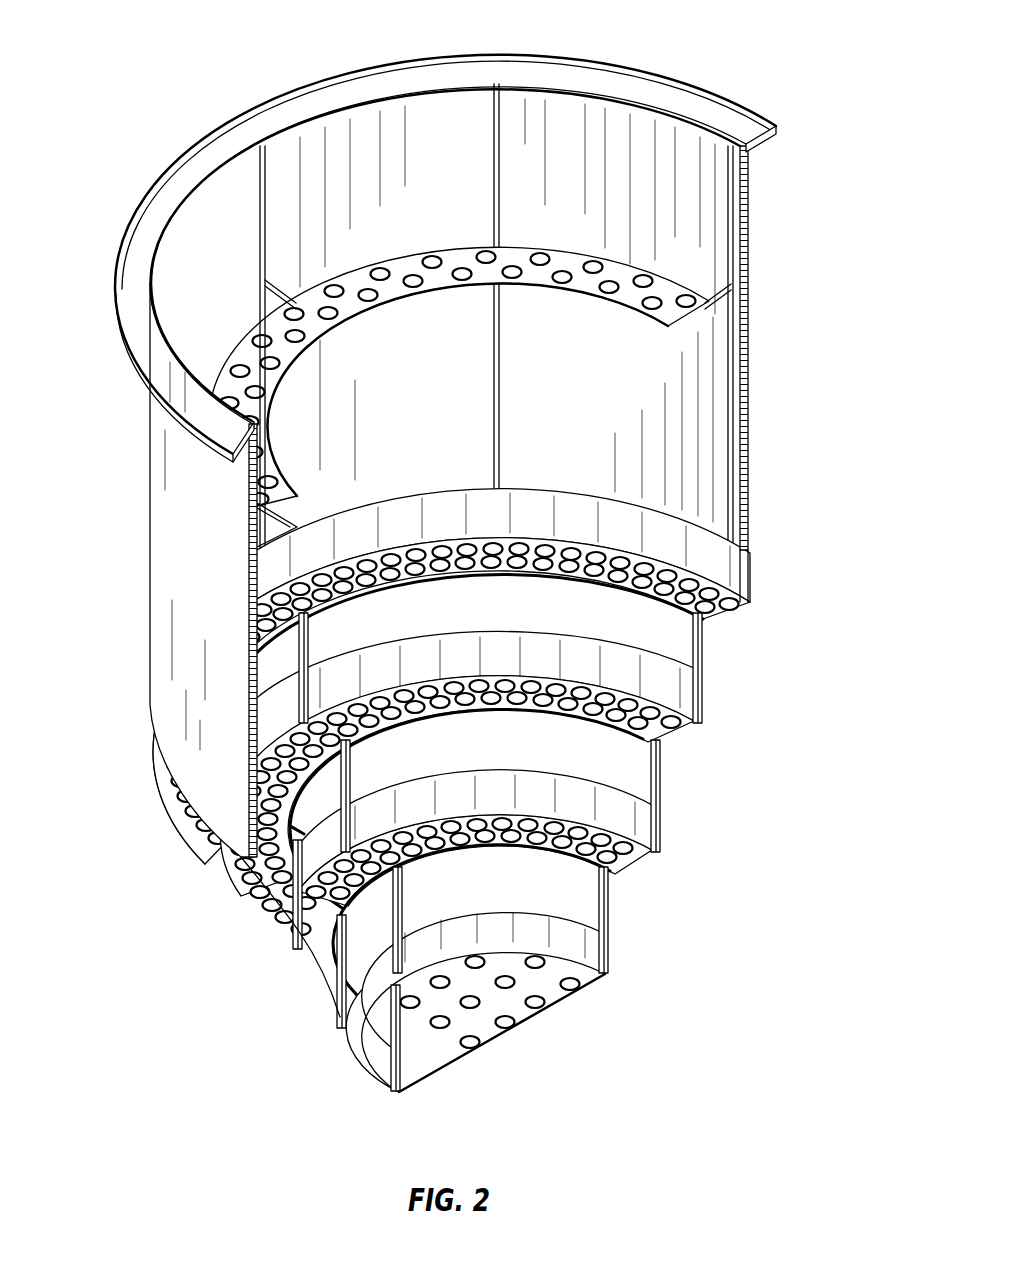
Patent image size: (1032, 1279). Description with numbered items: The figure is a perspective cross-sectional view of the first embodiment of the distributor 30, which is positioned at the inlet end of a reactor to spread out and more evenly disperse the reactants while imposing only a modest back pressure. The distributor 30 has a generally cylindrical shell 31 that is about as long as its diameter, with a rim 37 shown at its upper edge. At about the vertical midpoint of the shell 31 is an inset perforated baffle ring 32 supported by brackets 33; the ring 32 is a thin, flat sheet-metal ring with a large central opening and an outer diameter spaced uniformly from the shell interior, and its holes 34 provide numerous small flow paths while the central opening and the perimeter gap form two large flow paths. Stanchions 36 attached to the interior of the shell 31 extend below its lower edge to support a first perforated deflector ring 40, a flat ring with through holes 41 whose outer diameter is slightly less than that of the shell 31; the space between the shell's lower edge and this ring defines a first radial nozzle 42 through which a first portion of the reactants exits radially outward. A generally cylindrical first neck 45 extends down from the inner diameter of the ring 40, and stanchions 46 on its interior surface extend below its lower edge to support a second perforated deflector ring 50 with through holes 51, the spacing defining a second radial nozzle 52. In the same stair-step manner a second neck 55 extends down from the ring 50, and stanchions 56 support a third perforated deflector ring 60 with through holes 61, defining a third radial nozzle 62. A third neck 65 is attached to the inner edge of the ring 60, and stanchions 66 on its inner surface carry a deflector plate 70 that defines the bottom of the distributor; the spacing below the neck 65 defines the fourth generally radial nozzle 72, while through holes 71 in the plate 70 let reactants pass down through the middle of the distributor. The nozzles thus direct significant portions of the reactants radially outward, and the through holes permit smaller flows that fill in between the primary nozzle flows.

The distributor 30 is at (759, 192).
The generally cylindrical shell 31 is at (752, 456).
The inset perforated baffle ring 32 is at (580, 264).
The brackets 33 is at (288, 280).
The holes 34 is at (490, 255).
The stanchions 36 is at (495, 385).
The top rim flange 37 is at (687, 93).
The first perforated deflector ring 40 is at (570, 556).
The through holes 41 is at (412, 548).
The first radial nozzle 42 is at (718, 556).
The first neck 45 is at (497, 620).
The stanchions 46 is at (322, 655).
The second perforated deflector ring 50 is at (600, 695).
The through holes 51 is at (568, 683).
The second radial nozzle 52 is at (690, 695).
The second neck 55 is at (500, 765).
The stanchions 56 is at (365, 766).
The third perforated deflector ring 60 is at (582, 832).
The through holes 61 is at (507, 815).
The third radial nozzle 62 is at (622, 810).
The third neck 65 is at (485, 895).
The stanchions 66 is at (613, 901).
The deflector plate 70 is at (516, 1012).
The through holes 71 is at (477, 962).
The fourth generally radial nozzle 72 is at (578, 945).